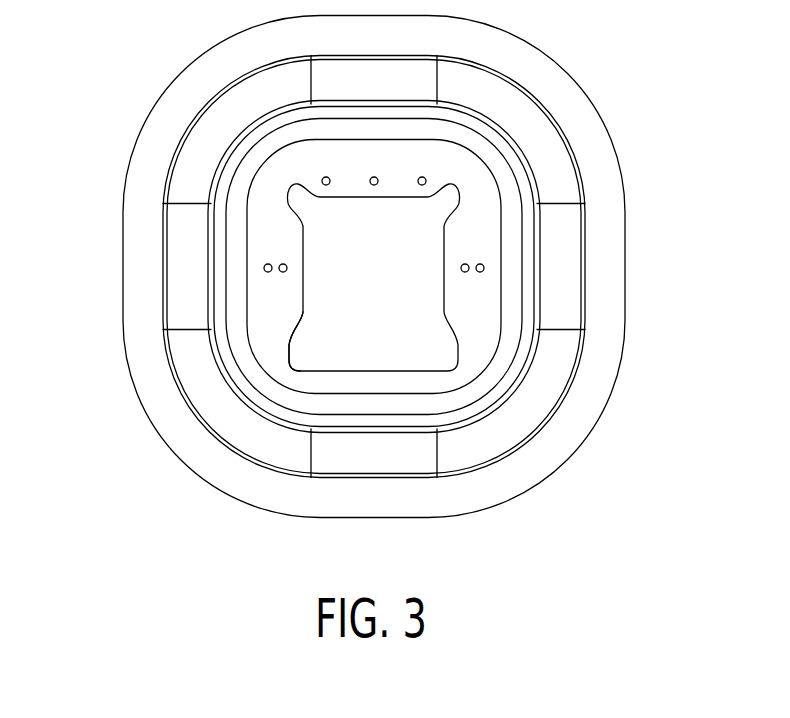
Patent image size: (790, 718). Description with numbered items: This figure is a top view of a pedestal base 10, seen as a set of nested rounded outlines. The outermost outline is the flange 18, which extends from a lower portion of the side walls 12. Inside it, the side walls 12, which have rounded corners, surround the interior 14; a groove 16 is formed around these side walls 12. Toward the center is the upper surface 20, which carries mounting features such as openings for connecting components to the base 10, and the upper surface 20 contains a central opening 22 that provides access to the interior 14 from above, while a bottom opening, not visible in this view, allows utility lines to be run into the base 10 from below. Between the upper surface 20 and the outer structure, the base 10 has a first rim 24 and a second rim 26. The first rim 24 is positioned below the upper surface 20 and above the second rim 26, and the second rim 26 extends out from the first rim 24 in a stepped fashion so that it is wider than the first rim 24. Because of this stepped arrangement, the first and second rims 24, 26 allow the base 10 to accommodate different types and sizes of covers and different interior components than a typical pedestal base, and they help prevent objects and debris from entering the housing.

The base 10 is at (125, 86).
The side walls 12 is at (515, 118).
The interior 14 is at (423, 259).
The groove 16 is at (543, 299).
The flange 18 is at (563, 437).
The upper surface 20 is at (297, 377).
The central opening 22 is at (317, 327).
The first rim 24 is at (235, 278).
The second rim 26 is at (218, 212).